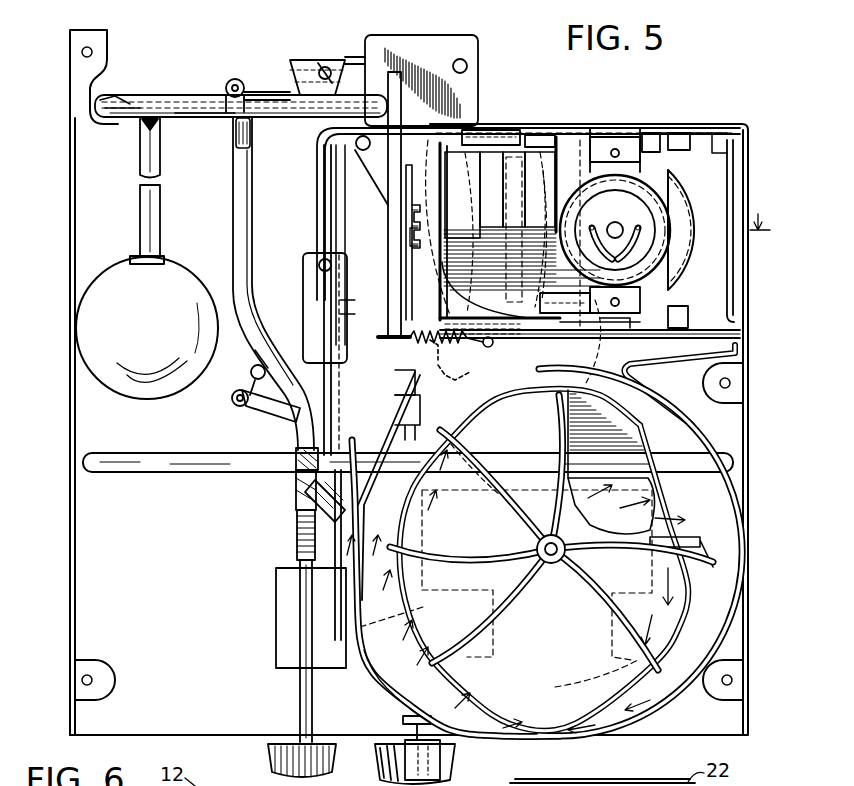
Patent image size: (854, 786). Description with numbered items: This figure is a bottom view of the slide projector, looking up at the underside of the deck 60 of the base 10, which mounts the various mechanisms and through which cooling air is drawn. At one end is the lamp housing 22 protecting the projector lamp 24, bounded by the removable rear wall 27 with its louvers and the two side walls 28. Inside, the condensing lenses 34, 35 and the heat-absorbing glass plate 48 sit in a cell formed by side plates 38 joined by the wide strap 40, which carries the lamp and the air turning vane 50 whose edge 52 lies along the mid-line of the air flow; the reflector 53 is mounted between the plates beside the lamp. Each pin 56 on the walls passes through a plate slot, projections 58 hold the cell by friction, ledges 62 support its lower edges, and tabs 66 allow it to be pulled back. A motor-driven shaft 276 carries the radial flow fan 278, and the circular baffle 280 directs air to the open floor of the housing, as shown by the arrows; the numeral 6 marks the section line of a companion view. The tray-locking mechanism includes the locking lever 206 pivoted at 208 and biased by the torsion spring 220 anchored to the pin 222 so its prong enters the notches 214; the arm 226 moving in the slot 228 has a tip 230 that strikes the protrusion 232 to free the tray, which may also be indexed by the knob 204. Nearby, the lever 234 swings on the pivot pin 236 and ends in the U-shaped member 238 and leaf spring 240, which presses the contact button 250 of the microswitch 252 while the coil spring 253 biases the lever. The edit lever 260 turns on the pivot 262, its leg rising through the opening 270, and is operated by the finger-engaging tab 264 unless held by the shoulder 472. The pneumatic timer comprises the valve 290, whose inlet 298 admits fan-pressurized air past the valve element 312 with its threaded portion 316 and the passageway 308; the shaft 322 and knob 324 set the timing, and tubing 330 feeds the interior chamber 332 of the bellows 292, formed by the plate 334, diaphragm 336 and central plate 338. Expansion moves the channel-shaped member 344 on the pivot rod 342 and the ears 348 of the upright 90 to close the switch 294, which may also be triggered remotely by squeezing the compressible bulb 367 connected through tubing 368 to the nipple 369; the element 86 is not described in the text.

The base 10 is at (53, 490).
The section line 6 is at (582, 235).
The housing 22 is at (722, 120).
The projector lamp 24 is at (680, 203).
The rear wall 27 is at (745, 287).
The side walls 28 is at (660, 126).
The condensing lens 34 is at (440, 200).
The condensing lens 35 is at (545, 186).
The side plates 38 is at (653, 148).
The wide strap 40 is at (620, 137).
The heat-absorbing glass plate 48 is at (494, 190).
The air turning vane 50 is at (573, 338).
The edge 52 is at (610, 338).
The reflector 53 is at (688, 222).
The pin 56 is at (592, 135).
The projections 58 is at (532, 130).
The deck 60 is at (100, 562).
The ledges 62 is at (490, 130).
The tabs 66 is at (684, 150).
The support bar 86 is at (150, 462).
The upright 90 is at (365, 54).
The knob 204 is at (398, 744).
The locking lever 206 is at (278, 420).
The pivot 208 is at (232, 402).
The notches 214 is at (458, 378).
The torsion spring 220 is at (252, 371).
The pin 222 is at (257, 358).
The arm 226 is at (340, 314).
The slot 228 is at (404, 212).
The tip 230 is at (397, 396).
The protrusion 232 is at (396, 410).
The lever 234 is at (392, 192).
The pivot pin 236 is at (385, 172).
The U-shaped member 238 is at (428, 345).
The leaf spring 240 is at (320, 345).
The contact button 250 is at (340, 300).
The microswitch 252 is at (302, 265).
The coil spring 253 is at (489, 348).
The lever 260 is at (385, 670).
The pivot 262 is at (412, 614).
The finger-engaging tab 264 is at (444, 753).
The opening 270 is at (406, 236).
The shaft 276 is at (536, 548).
The fan 278 is at (592, 625).
The baffle 280 is at (594, 736).
The valve 290 is at (294, 512).
The bellows 292 is at (202, 116).
The switch 294 is at (318, 60).
The inlet 298 is at (366, 478).
The passageway 308 is at (292, 470).
The valve element 312 is at (300, 495).
The threaded portion 316 is at (294, 538).
The shaft 322 is at (298, 685).
The knob 324 is at (290, 744).
The tubing 330 is at (233, 192).
The interior chamber 332 is at (118, 98).
The plate 334 is at (275, 118).
The diaphragm 336 is at (132, 100).
The plate 338 is at (186, 96).
The pivot rod 342 is at (232, 80).
The channel-shaped member 344 is at (258, 90).
The ears 348 is at (325, 62).
The compressible bulb 367 is at (157, 316).
The tubing 368 is at (140, 228).
The nipple 369 is at (148, 124).
The shoulder 472 is at (403, 719).